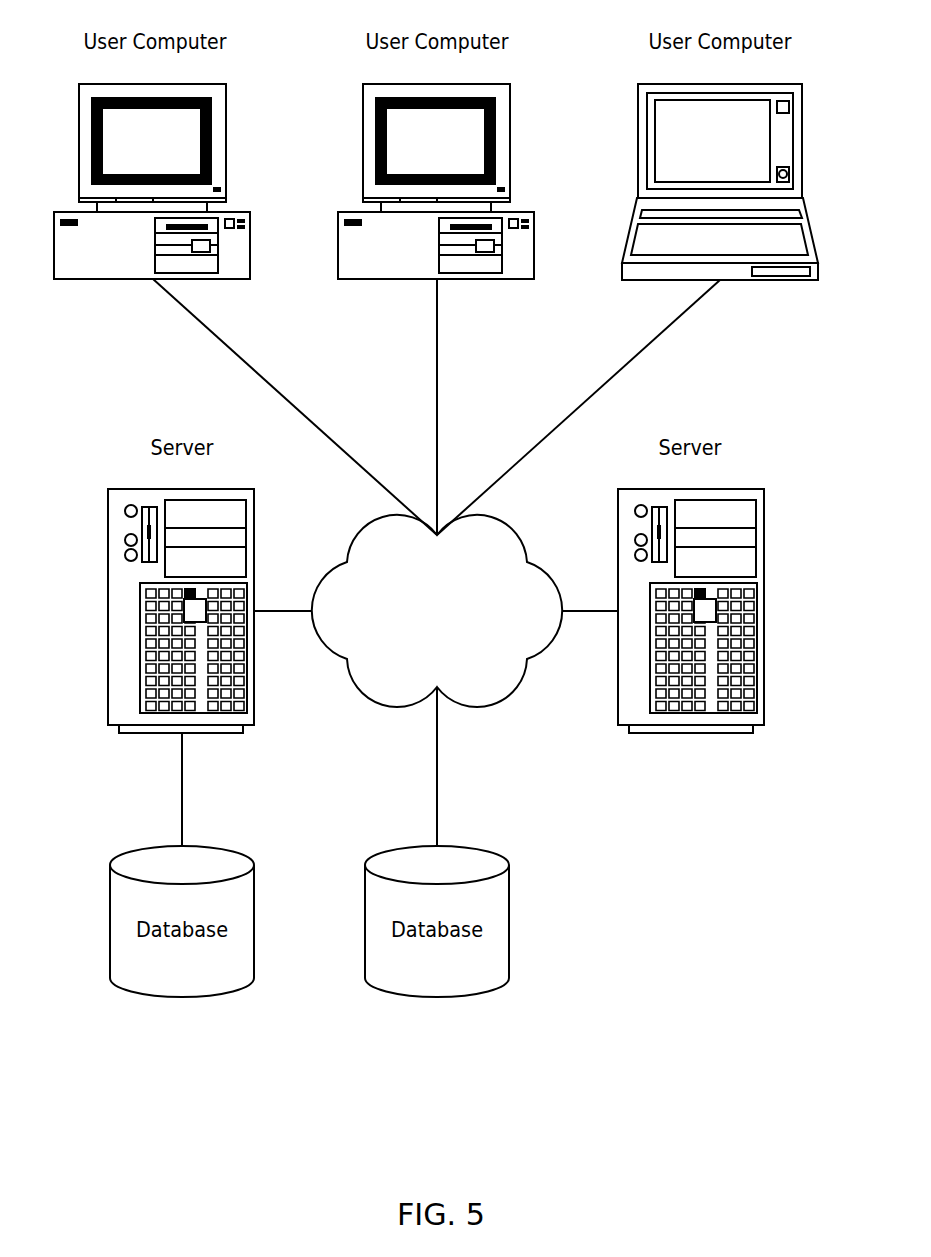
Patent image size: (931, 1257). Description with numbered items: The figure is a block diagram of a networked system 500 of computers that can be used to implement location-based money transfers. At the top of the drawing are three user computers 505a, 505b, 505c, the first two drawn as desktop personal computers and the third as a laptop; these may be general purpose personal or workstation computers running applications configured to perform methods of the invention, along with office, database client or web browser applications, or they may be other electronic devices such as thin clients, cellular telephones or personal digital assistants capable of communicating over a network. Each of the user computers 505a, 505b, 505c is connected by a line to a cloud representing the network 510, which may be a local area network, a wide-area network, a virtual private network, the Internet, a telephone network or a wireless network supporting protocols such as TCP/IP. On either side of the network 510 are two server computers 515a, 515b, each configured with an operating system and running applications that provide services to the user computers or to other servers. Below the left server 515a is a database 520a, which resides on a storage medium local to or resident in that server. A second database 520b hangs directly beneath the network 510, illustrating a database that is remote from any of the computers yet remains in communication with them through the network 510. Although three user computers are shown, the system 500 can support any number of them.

The system 500 is at (675, 1042).
The user computer 505a is at (250, 230).
The user computer 505b is at (338, 230).
The user computer 505c is at (635, 182).
The network 510 is at (472, 708).
The server computer 515a is at (108, 611).
The server computer 515b is at (764, 611).
The database 520a is at (180, 997).
The database 520b is at (437, 997).